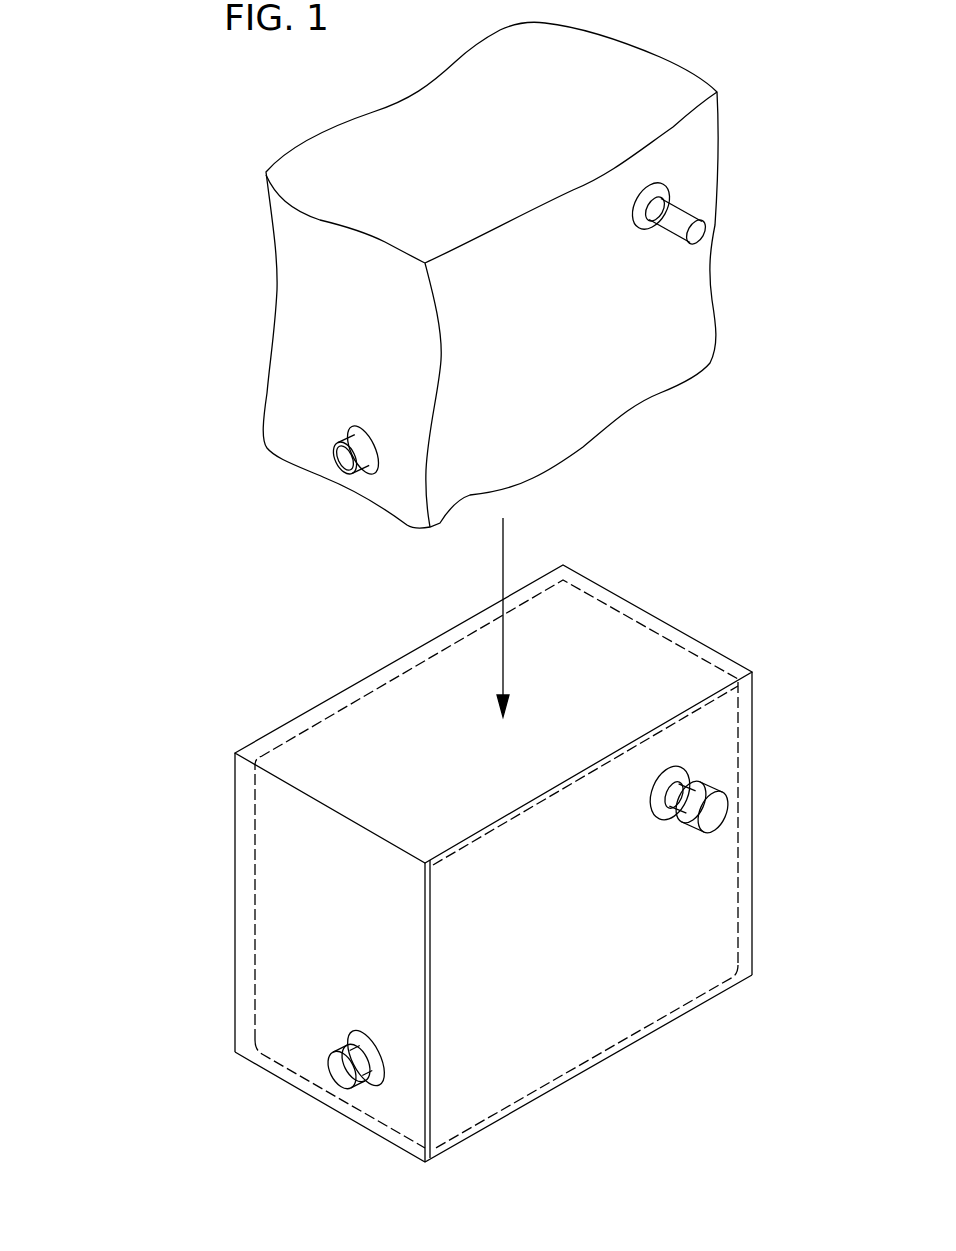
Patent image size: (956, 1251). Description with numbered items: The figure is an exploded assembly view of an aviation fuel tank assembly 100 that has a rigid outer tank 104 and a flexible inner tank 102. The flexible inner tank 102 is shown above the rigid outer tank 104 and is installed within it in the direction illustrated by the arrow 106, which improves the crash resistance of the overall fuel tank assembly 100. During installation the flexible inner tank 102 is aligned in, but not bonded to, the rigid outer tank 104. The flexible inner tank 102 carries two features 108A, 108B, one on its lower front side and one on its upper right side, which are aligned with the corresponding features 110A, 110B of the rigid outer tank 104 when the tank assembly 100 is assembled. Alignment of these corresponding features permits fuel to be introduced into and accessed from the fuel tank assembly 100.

The aviation fuel tank assembly 100 is at (140, 444).
The flexible inner tank 102 is at (285, 255).
The rigid outer tank 104 is at (235, 815).
The arrow 106 is at (503, 563).
The feature of the flexible inner tank 108A is at (360, 448).
The feature of the flexible inner tank 108B is at (676, 221).
The feature of the rigid outer tank 110A is at (342, 1070).
The feature of the rigid outer tank 110B is at (682, 790).